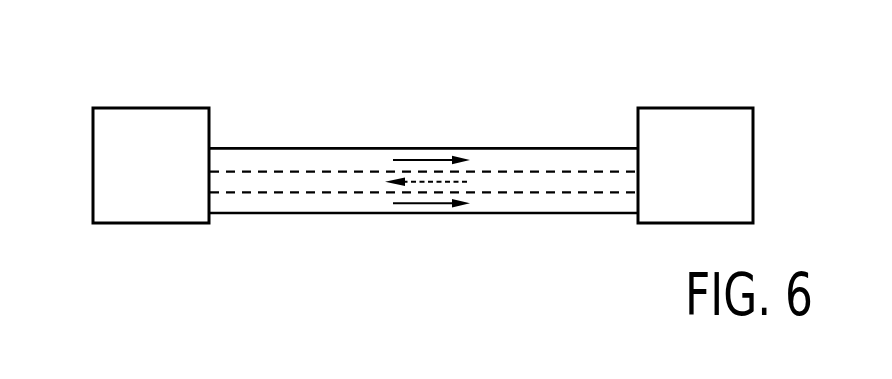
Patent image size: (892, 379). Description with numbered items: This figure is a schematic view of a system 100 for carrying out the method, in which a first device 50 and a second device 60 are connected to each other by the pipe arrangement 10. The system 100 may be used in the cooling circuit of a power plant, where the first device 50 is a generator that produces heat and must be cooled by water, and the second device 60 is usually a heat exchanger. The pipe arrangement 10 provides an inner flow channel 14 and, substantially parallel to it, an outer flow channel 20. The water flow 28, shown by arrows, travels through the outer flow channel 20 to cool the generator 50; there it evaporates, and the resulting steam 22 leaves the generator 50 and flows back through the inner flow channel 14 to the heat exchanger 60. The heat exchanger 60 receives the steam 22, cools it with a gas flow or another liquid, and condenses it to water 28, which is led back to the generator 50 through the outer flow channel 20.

The system 100 is at (322, 82).
The pipe arrangement 10 is at (404, 130).
The inner flow channel 14 is at (552, 187).
The outer flow channel 20 is at (502, 162).
The steam flow 22 is at (437, 182).
The water flow 28 is at (437, 215).
The first device 50 is at (683, 122).
The second device 60 is at (135, 120).